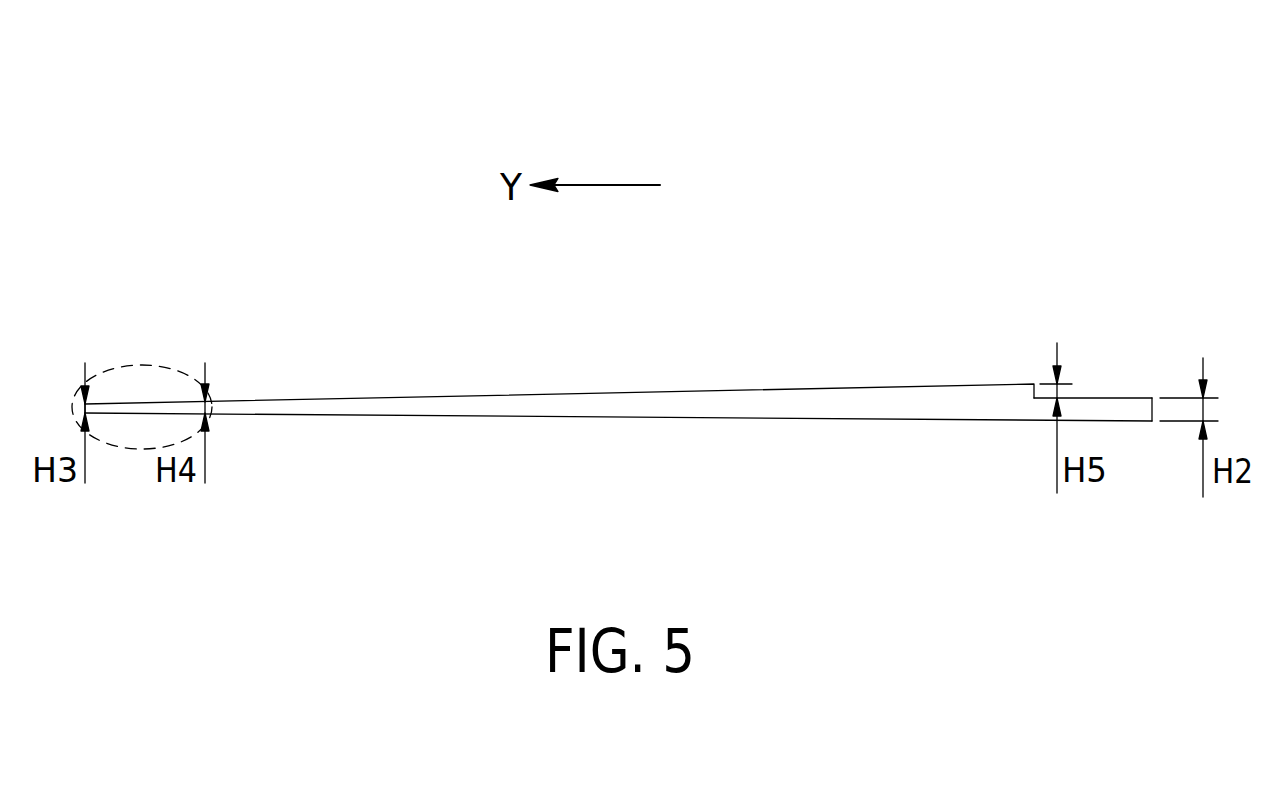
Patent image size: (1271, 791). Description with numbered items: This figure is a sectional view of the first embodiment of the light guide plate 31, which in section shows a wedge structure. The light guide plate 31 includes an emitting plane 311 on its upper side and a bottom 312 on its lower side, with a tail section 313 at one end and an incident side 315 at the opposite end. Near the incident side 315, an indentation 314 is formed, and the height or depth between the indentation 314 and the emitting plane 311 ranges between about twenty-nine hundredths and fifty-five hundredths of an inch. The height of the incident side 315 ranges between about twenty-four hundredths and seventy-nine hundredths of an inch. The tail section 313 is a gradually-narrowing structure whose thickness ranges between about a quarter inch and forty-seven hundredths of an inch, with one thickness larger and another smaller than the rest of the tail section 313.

The light guide plate 31 is at (807, 142).
The emitting plane 311 is at (555, 392).
The bottom 312 is at (660, 418).
The tail section 313 is at (145, 363).
The indentation 314 is at (1105, 398).
The incident side 315 is at (1152, 412).